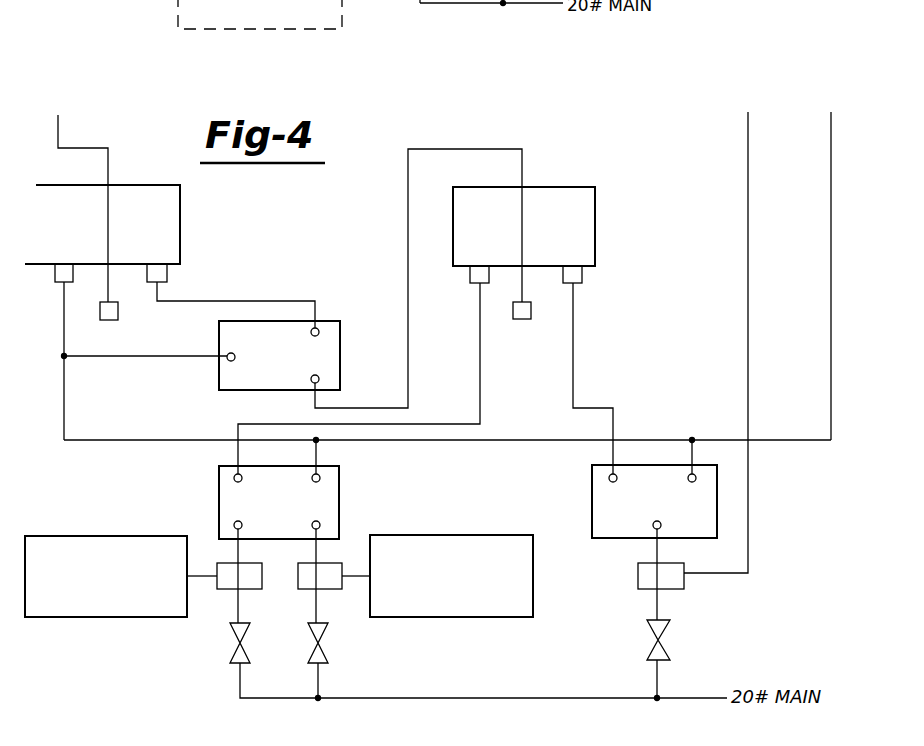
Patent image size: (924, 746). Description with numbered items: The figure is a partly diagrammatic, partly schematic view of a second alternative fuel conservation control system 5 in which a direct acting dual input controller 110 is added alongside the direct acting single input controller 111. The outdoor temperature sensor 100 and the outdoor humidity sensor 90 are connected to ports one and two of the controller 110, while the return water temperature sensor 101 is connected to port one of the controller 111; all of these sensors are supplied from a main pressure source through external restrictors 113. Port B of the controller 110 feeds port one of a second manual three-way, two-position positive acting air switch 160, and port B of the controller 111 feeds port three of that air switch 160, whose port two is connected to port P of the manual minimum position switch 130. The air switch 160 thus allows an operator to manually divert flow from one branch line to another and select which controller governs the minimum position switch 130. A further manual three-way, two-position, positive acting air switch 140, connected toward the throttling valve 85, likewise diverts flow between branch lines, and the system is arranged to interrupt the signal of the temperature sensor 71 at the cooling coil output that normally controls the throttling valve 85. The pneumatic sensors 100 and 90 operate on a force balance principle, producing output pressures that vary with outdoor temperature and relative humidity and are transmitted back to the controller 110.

The control system 5 is at (338, 188).
The manual three-way two-position positive acting air switch 140 is at (180, 213).
The second manual three-way two-position positive acting air switch 160 is at (595, 213).
The manual minimum position switch 130 is at (340, 327).
The direct acting dual input controller 110 is at (340, 491).
The direct acting single input controller 111 is at (592, 480).
The outdoor temperature sensor 100 is at (178, 492).
The outdoor humidity sensor 90 is at (342, 31).
The external restrictors 113 is at (308, 641).
The throttling valve 85 is at (76, 162).
The return water temperature sensor 101 is at (728, 286).
The temperature sensor 71 is at (830, 220).